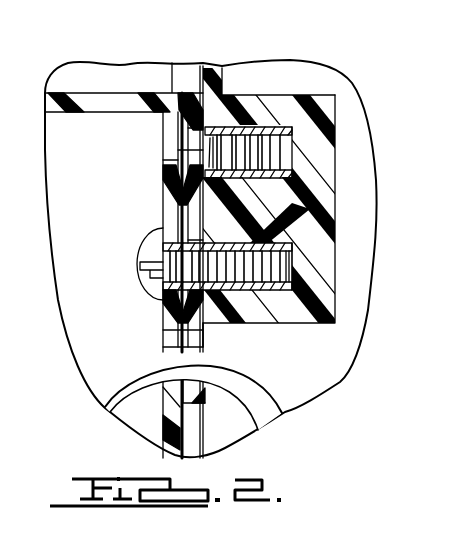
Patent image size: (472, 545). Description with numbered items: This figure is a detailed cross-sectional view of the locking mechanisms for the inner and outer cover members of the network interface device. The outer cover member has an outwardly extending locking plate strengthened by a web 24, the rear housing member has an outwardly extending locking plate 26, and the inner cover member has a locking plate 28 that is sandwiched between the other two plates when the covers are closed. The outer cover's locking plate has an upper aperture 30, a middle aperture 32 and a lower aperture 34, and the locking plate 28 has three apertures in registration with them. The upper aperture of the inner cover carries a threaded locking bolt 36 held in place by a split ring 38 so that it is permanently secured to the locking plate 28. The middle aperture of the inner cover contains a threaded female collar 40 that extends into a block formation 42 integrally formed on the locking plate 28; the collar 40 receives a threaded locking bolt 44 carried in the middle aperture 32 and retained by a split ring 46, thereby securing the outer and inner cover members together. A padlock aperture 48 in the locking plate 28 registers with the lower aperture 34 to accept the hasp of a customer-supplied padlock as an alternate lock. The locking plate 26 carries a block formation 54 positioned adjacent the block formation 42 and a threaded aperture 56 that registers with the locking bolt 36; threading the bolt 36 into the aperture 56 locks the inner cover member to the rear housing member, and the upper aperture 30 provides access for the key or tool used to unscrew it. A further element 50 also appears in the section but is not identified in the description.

The web 24 is at (80, 95).
The locking plate 26 is at (207, 72).
The locking plate 28 is at (183, 93).
The upper aperture 30 is at (168, 168).
The middle aperture 32 is at (164, 246).
The lower aperture 34 is at (163, 334).
The threaded locking bolt 36 is at (190, 137).
The split ring 38 is at (202, 152).
The threaded female collar 40 is at (288, 294).
The block formation 42 is at (296, 288).
The threaded locking bolt 44 is at (152, 270).
The split ring 46 is at (186, 236).
The padlock aperture 48 is at (188, 333).
The ring 50 is at (112, 388).
The block formation 54 is at (322, 142).
The threaded aperture 56 is at (273, 132).